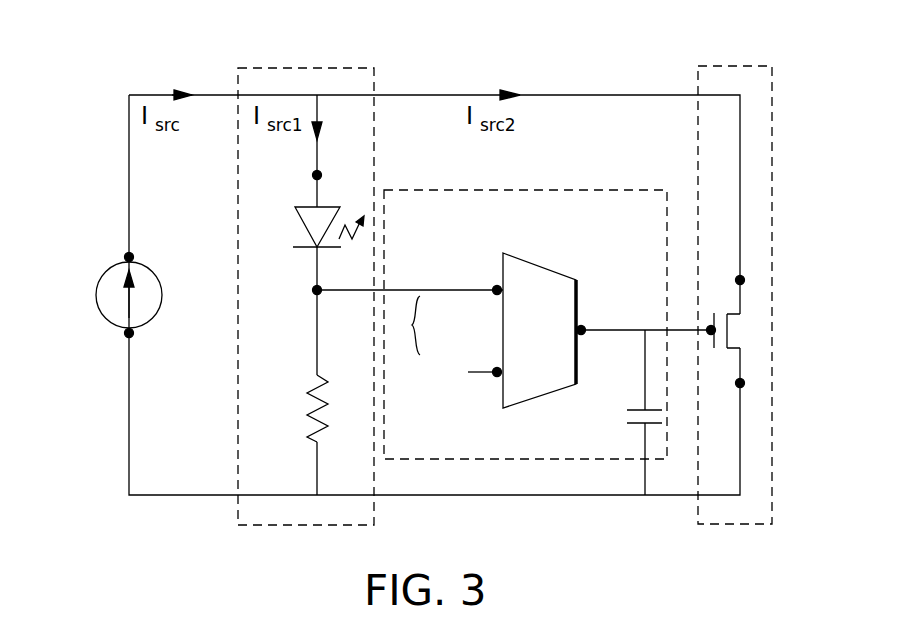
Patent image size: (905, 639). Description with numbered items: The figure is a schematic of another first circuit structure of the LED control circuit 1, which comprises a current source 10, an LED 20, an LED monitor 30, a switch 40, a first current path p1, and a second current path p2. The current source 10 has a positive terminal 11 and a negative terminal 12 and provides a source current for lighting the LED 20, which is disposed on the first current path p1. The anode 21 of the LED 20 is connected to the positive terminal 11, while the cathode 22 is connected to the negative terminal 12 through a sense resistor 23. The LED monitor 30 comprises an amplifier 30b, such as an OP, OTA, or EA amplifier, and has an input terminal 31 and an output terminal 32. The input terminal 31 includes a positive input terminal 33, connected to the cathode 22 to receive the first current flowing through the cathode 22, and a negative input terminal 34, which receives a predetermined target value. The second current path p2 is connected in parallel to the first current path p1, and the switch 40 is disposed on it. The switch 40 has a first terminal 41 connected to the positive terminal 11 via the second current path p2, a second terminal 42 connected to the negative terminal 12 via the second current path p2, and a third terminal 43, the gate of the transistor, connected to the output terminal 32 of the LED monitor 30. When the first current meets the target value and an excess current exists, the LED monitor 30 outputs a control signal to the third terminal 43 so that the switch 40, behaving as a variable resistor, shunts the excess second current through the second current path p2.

The LED control circuit 1 is at (574, 94).
The first current path p1 is at (306, 68).
The second current path p2 is at (737, 66).
The current source 10 is at (96, 297).
The positive terminal 11 is at (125, 257).
The negative terminal 12 is at (125, 333).
The LED 20 is at (305, 230).
The anode 21 is at (314, 175).
The cathode 22 is at (314, 290).
The sense resistor 23 is at (312, 415).
The LED monitor 30 is at (608, 190).
The amplifier 30b is at (549, 267).
The input terminal 31 is at (402, 325).
The output terminal 32 is at (584, 329).
The positive input terminal 33 is at (495, 292).
The negative input terminal 34 is at (497, 370).
The switch 40 is at (742, 330).
The first terminal 41 is at (745, 280).
The second terminal 42 is at (745, 383).
The third terminal 43 is at (708, 328).